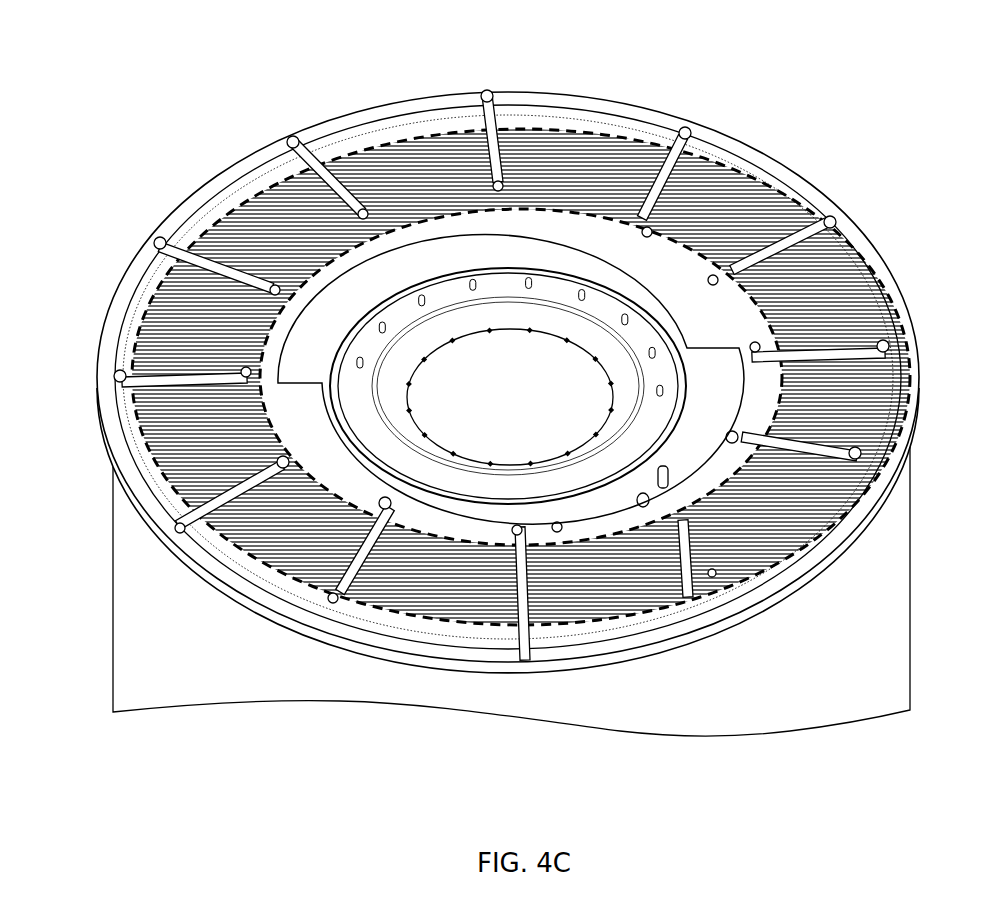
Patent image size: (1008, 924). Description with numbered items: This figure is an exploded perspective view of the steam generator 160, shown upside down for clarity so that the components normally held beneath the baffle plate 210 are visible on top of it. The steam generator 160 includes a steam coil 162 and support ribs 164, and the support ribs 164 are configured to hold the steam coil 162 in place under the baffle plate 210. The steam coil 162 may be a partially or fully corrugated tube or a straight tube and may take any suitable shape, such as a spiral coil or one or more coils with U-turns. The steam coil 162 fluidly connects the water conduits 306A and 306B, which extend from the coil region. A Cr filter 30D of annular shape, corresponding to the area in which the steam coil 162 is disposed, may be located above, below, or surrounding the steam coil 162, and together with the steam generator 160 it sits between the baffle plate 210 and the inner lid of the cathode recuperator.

The steam generator 160 is at (551, 788).
The Cr filter 30D is at (510, 125).
The steam coil 162 is at (255, 253).
The support ribs 164 is at (213, 280).
The baffle plate 210 is at (310, 415).
The water conduit 306A is at (666, 484).
The water conduit 306B is at (674, 470).